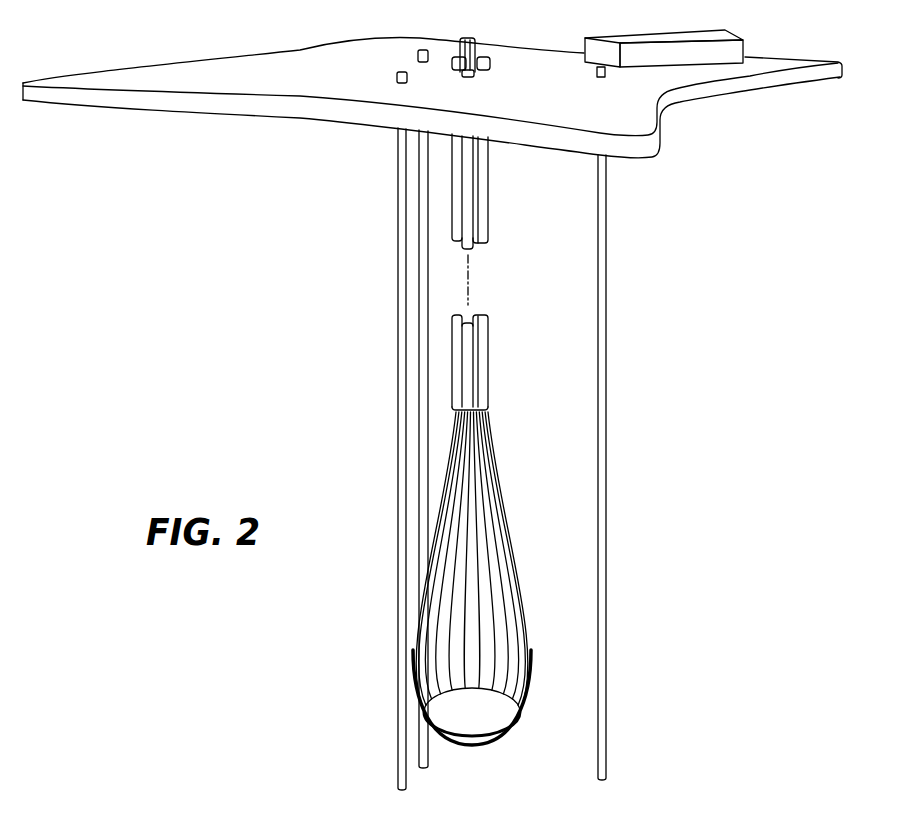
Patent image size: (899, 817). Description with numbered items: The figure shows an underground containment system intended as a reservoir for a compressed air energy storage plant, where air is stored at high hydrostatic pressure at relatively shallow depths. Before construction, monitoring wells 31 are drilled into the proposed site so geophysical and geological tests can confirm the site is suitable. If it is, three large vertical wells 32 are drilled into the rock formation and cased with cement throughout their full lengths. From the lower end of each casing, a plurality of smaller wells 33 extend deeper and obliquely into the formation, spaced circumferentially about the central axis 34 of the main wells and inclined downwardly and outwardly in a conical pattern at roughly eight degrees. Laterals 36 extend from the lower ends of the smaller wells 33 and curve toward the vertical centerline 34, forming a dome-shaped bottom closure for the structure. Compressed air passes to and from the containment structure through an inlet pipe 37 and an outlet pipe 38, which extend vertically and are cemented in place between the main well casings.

The monitoring wells 31 is at (420, 292).
The vertical wells 32 is at (490, 202).
The smaller wells 33 is at (493, 657).
The central axis 34 is at (471, 299).
The laterals 36 is at (520, 702).
The inlet pipe 37 is at (459, 46).
The outlet pipe 38 is at (479, 46).